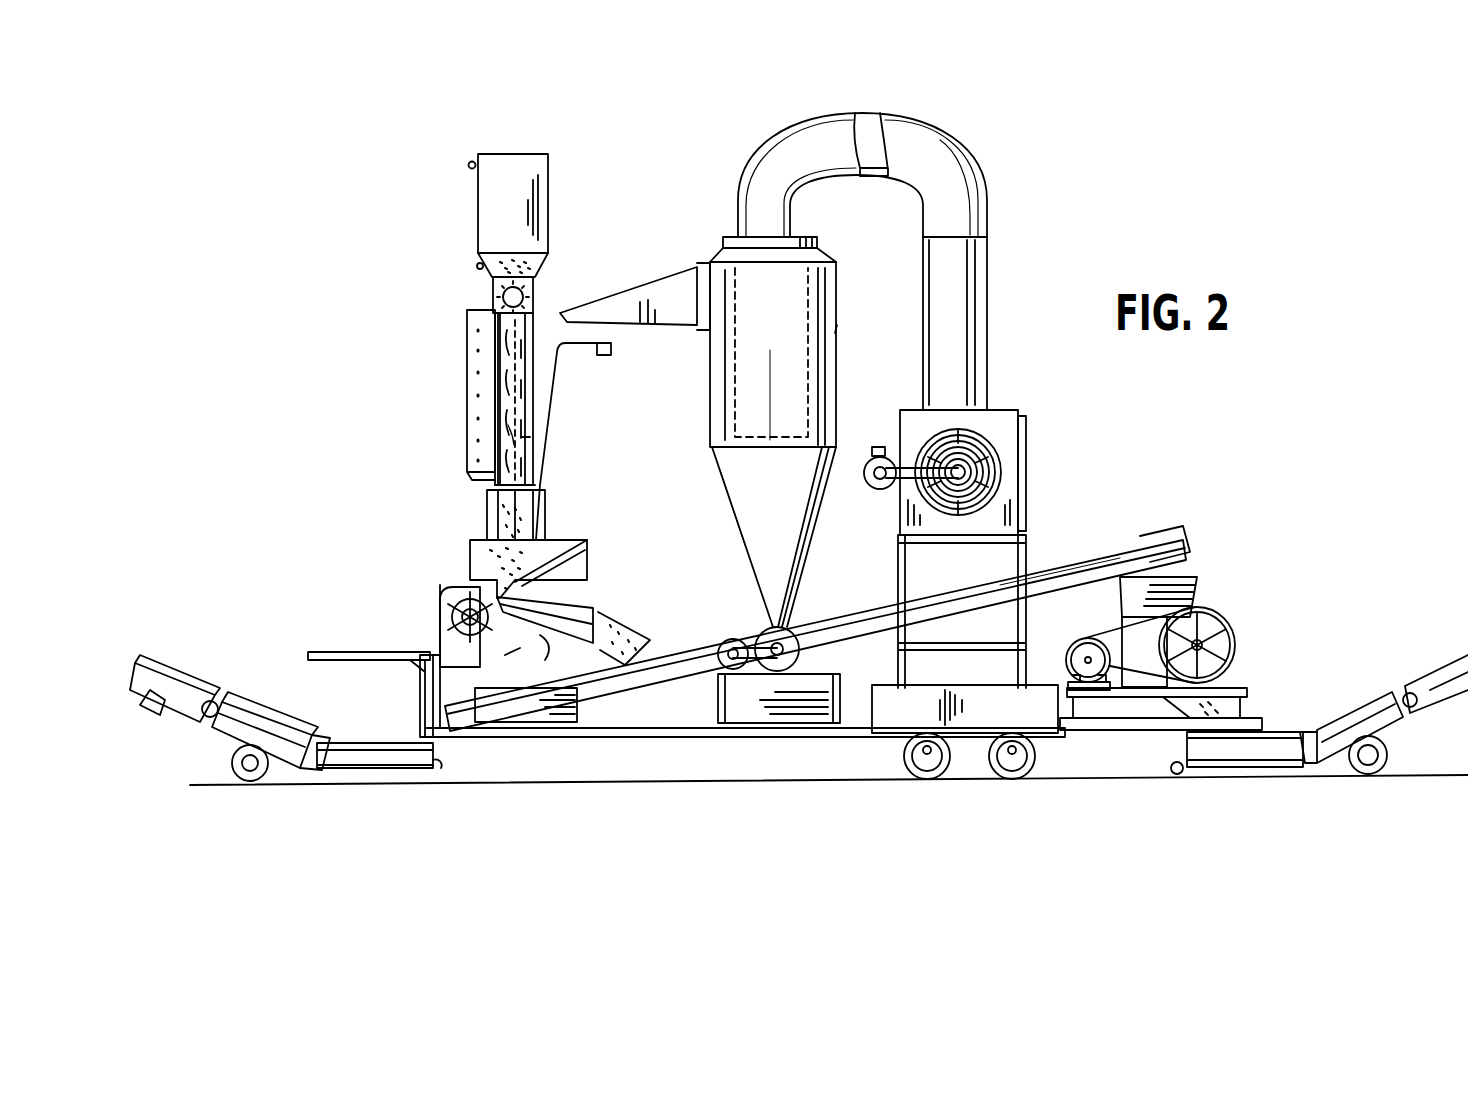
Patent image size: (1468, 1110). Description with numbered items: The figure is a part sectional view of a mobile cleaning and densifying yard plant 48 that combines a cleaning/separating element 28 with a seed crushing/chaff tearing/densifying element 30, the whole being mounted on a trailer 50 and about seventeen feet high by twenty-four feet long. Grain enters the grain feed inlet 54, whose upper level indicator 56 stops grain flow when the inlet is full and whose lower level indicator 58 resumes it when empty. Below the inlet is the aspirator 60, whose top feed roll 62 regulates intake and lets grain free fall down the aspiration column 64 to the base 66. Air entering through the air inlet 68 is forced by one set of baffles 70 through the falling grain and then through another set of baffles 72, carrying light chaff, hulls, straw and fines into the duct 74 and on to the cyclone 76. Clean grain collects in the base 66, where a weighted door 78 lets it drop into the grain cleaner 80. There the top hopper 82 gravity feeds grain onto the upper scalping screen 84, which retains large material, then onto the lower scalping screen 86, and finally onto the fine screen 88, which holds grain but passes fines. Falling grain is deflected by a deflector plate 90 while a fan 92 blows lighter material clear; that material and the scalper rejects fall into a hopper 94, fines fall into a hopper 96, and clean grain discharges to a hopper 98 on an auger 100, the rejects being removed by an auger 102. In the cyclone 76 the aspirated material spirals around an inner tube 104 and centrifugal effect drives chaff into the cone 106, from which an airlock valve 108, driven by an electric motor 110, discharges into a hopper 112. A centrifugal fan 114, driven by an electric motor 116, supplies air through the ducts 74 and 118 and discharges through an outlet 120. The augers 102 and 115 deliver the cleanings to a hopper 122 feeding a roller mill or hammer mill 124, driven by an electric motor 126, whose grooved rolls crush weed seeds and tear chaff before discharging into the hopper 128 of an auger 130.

The cleaning/separating element 28 is at (430, 490).
The seed crushing/chaff tearing/densifying element 30 is at (1228, 592).
The cleaning and densifying yard plant 48 is at (996, 168).
The trailer 50 is at (1115, 720).
The grain feed inlet 54 is at (520, 175).
The upper level indicator 56 is at (468, 162).
The lower level indicator 58 is at (477, 265).
The aspirator 60 is at (460, 352).
The top feed roll 62 is at (540, 305).
The aspiration column 64 is at (523, 400).
The base 66 is at (546, 496).
The air inlet 68 is at (467, 318).
The baffles 70 is at (510, 425).
The baffles 72 is at (522, 437).
The duct 74 is at (668, 296).
The cyclone 76 is at (722, 247).
The weighted door 78 is at (495, 545).
The grain cleaner 80 is at (440, 565).
The top hopper 82 is at (555, 545).
The upper scalping screen 84 is at (595, 600).
The lower scalping screen 86 is at (622, 612).
The fine screen 88 is at (543, 650).
The deflector plate 90 is at (512, 658).
The fan 92 is at (452, 615).
The hopper 94 is at (635, 632).
The hopper 96 is at (553, 700).
The hopper 98 is at (362, 752).
The auger 100 is at (240, 700).
The auger 102 is at (670, 670).
The inner tube 104 is at (835, 333).
The cone 106 is at (795, 550).
The airlock valve 108 is at (782, 672).
The electric motor 110 is at (733, 669).
The hopper 112 is at (770, 700).
The centrifugal fan 114 is at (1026, 485).
The auger 115 is at (1148, 538).
The electric motor 116 is at (880, 450).
The duct 118 is at (988, 222).
The outlet 120 is at (1020, 415).
The hopper 122 is at (1195, 577).
The roller mill or hammer mill 124 is at (1240, 650).
The electric motor 126 is at (1075, 620).
The hopper 128 is at (1250, 760).
The auger 130 is at (1352, 710).